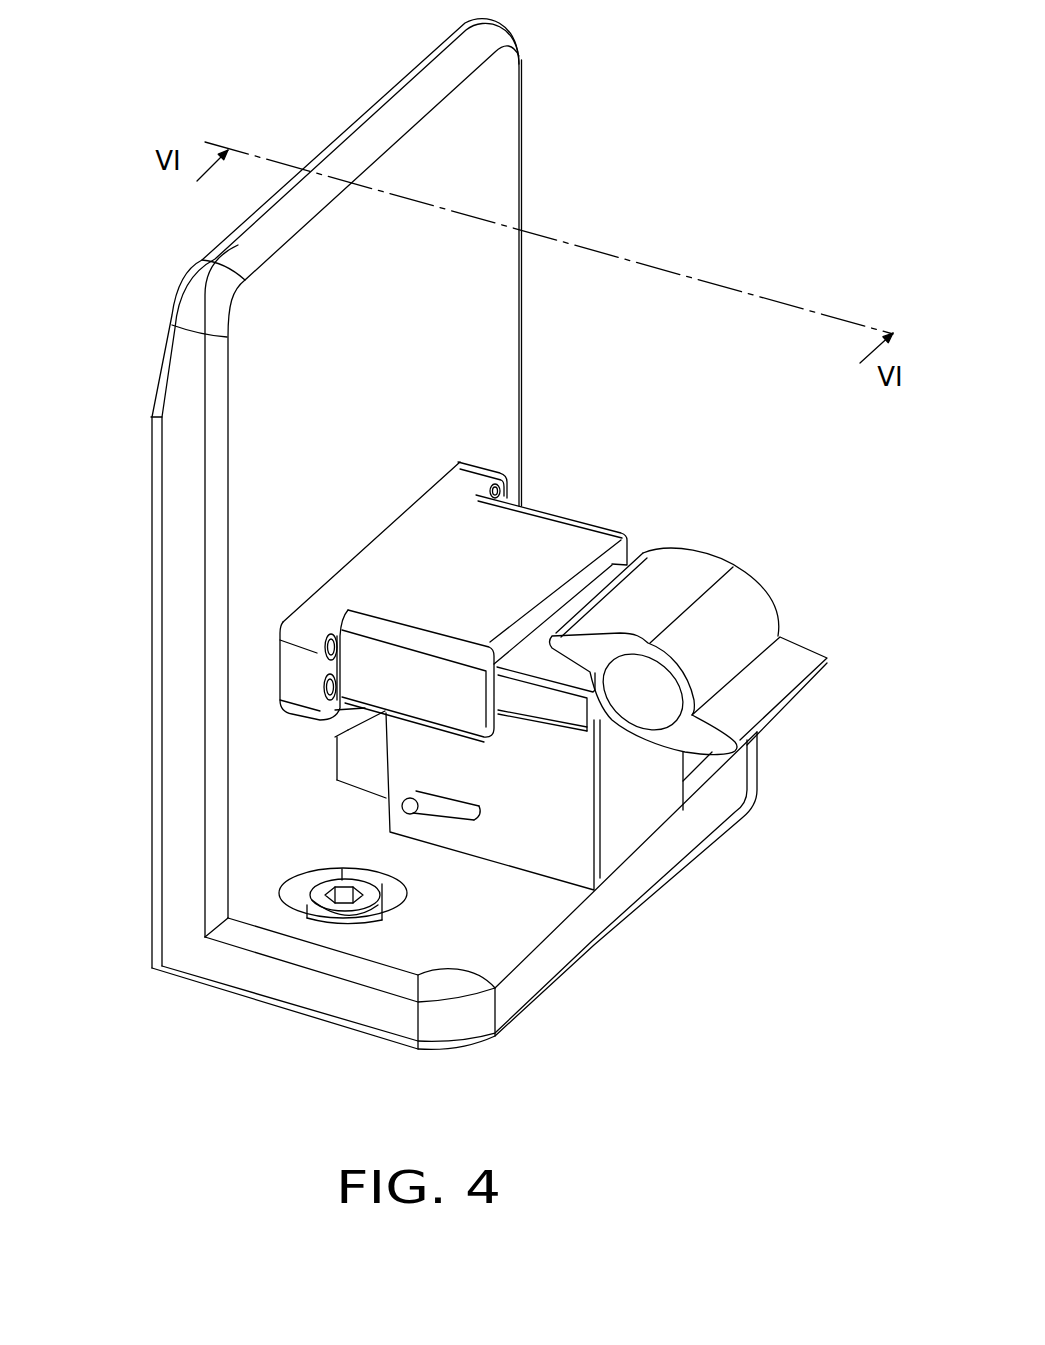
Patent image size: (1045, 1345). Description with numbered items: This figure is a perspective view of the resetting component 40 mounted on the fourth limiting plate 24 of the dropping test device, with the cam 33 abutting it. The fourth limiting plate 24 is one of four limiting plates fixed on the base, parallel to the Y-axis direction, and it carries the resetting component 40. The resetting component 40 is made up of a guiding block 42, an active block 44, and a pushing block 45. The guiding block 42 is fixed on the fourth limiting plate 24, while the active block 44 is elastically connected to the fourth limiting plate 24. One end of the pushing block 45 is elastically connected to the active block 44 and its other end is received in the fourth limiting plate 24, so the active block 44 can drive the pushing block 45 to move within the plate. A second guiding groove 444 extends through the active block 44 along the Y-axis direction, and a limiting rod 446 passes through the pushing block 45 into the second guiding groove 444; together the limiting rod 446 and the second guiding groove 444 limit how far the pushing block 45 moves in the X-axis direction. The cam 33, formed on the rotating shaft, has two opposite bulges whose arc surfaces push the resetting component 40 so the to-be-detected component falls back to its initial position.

The fourth limiting plate 24 is at (265, 415).
The resetting component 40 is at (461, 732).
The guiding block 42 is at (533, 535).
The active block 44 is at (633, 808).
The pushing block 45 is at (357, 765).
The cam 33 is at (743, 607).
The second guiding groove 444 is at (462, 822).
The limiting rod 446 is at (422, 808).